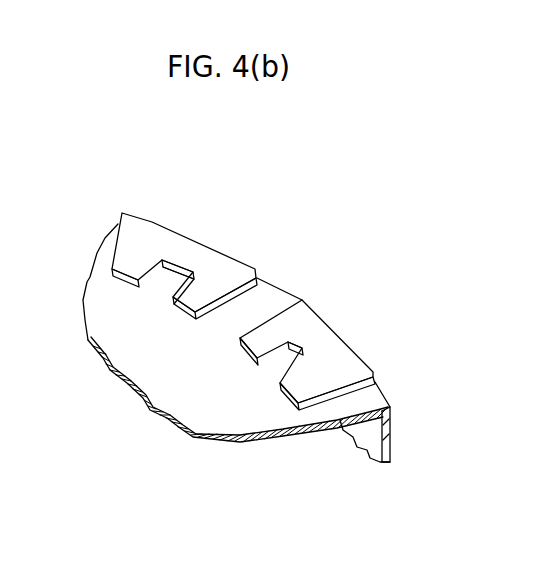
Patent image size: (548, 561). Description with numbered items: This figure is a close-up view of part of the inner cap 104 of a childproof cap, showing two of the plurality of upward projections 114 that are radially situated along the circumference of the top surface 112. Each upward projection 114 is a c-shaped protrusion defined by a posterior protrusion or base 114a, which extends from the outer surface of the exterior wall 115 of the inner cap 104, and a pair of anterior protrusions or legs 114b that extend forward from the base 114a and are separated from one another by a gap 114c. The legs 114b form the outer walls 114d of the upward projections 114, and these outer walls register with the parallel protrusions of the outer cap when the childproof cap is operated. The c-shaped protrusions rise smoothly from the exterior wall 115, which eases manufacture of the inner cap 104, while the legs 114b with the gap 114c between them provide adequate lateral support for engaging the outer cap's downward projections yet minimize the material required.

The inner cap 104 is at (187, 432).
The top surface 112 is at (260, 422).
The upward projections 114 is at (252, 267).
The base 114a is at (185, 242).
The legs 114b is at (127, 253).
The gap 114c is at (167, 277).
The outer walls 114d is at (217, 312).
The exterior wall 115 is at (392, 432).